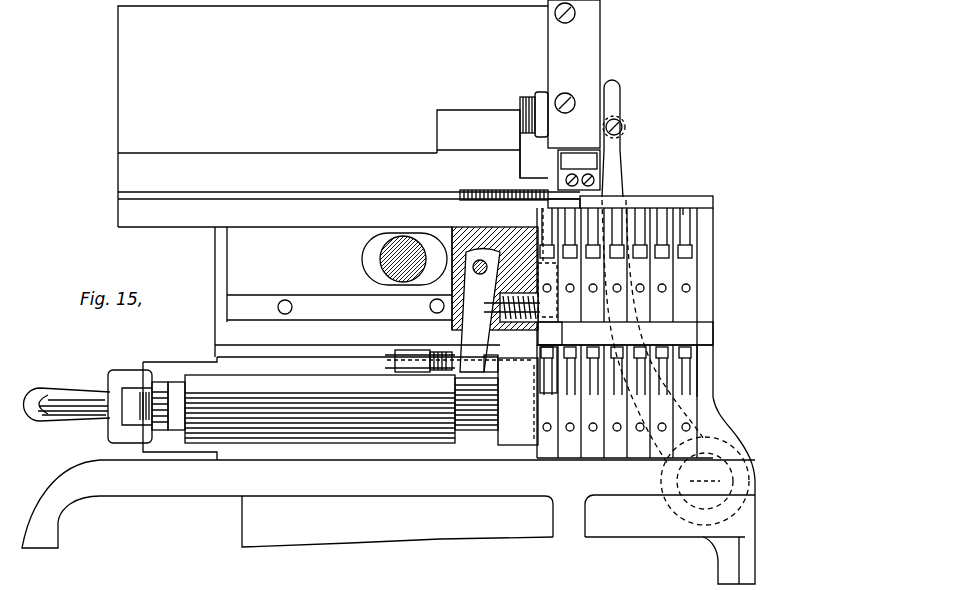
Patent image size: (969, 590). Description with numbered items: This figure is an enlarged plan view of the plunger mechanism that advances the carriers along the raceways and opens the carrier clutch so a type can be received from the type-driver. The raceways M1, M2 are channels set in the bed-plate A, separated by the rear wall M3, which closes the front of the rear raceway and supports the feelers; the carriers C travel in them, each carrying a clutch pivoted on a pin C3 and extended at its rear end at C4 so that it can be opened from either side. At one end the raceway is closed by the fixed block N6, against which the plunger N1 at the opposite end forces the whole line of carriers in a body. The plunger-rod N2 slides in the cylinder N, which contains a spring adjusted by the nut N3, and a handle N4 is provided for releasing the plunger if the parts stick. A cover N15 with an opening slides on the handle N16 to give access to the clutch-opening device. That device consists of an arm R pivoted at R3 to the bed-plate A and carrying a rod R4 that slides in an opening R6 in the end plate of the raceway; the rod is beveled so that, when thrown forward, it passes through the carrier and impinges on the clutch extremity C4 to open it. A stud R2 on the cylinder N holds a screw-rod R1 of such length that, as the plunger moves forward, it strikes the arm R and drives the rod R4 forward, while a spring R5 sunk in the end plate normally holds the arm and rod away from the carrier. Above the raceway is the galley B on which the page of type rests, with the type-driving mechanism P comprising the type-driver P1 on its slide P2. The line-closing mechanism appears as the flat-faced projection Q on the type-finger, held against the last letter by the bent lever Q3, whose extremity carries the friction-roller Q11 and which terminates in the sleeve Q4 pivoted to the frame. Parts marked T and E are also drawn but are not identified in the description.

The type-table or galley B is at (349, 116).
The type-driving mechanism P is at (574, 74).
The type-driver P1 is at (548, 178).
The type-driver slide P2 is at (583, 163).
The flat-faced projection Q is at (553, 192).
The bent lever Q3 is at (617, 169).
The sleeve Q4 is at (678, 482).
The friction-roller Q11 is at (624, 127).
The toothed rack T is at (512, 191).
The plate E is at (686, 212).
The front raceway M1 is at (703, 212).
The rear raceway M2 is at (714, 369).
The rear wall of the raceway M3 is at (714, 331).
The carrier C is at (625, 333).
The pin C3 is at (692, 288).
The clutch extremity C4 is at (550, 306).
The cylinder N is at (320, 409).
The plunger N1 is at (497, 420).
The plunger-rod N2 is at (477, 430).
The nut N3 is at (160, 382).
The handle N4 is at (62, 400).
The block N6 is at (522, 258).
The cover N15 is at (250, 262).
The handle N16 is at (383, 262).
The bed-plate A is at (245, 338).
The arm R is at (500, 311).
The screw-rod R1 is at (443, 344).
The stud R2 is at (410, 356).
The pivot point R3 is at (457, 250).
The rod R4 is at (547, 322).
The spring R5 is at (460, 354).
The opening R6 is at (540, 303).